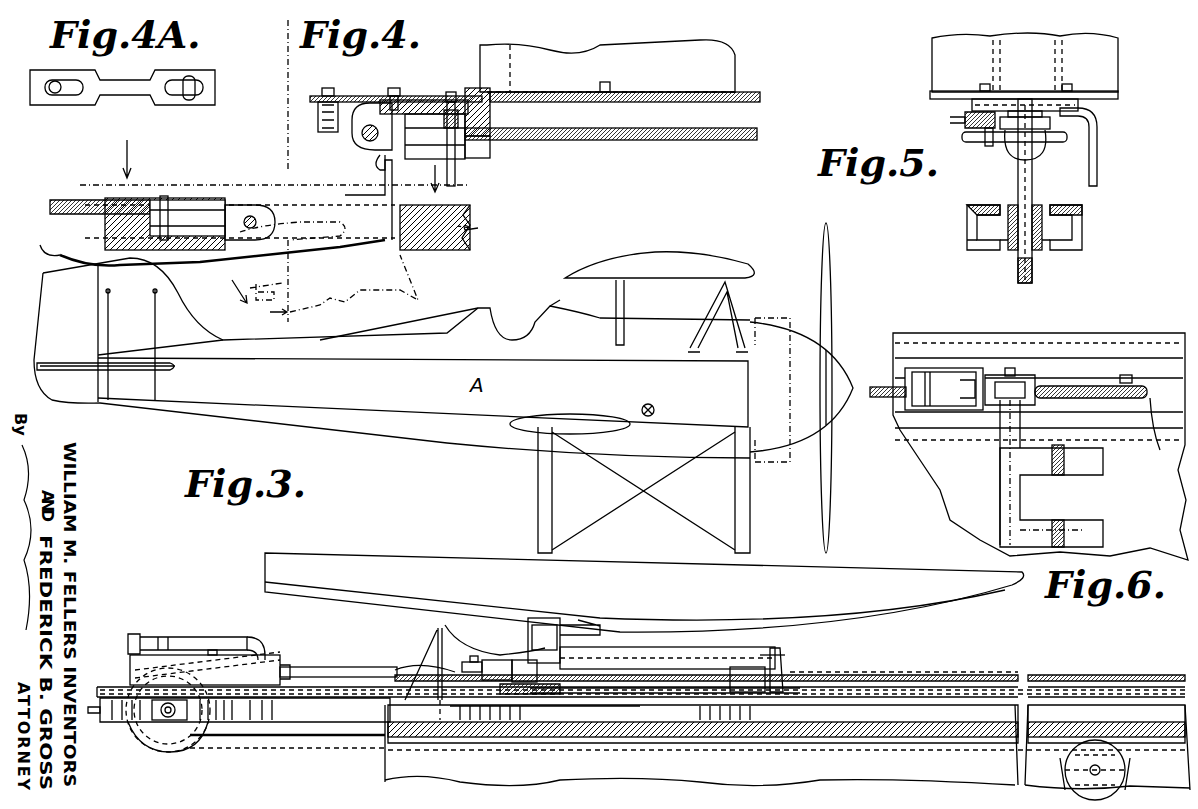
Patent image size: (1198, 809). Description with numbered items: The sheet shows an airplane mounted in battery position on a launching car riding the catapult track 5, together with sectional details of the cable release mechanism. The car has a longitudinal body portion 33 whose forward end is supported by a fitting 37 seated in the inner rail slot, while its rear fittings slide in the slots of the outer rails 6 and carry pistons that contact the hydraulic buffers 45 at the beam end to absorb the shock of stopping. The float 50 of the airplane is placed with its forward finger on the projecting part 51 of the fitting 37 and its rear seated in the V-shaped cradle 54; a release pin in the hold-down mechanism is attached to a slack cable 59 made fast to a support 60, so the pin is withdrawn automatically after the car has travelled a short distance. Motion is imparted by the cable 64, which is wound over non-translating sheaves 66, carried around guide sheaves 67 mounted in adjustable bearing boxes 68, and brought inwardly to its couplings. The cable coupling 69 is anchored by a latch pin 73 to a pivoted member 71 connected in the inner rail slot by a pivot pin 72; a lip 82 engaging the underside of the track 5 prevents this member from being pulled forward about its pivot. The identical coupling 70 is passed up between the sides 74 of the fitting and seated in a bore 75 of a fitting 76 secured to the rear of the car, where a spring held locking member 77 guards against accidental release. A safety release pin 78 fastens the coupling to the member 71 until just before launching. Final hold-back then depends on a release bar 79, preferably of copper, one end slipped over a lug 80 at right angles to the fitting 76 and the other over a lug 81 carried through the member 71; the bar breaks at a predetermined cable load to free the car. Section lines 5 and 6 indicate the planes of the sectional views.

In FIG. 4, the track 5 is at (279, 65).
In FIG. 5, the track 5 is at (1048, 250).
In FIG. 4, the outer rails 6 is at (284, 165).
In FIG. 3, the body portion 33 is at (682, 646).
In FIG. 3, the fitting 37 is at (848, 676).
In FIG. 3, the hydraulic buffers 45 is at (340, 658).
In FIG. 3, the float 50 is at (644, 592).
In FIG. 3, the projecting part 51 is at (790, 662).
In FIG. 3, the V-shaped cradle 54 is at (550, 630).
In FIG. 3, the slack cable 59 is at (470, 640).
In FIG. 3, the support 60 is at (435, 665).
In FIG. 4, the cable 64 is at (704, 141).
In FIG. 6, the cable 64 is at (878, 387).
In FIG. 3, the cable 64 is at (982, 675).
In FIG. 3, the non-translating sheaves 66 is at (1128, 772).
In FIG. 3, the guide sheaves 67 is at (165, 752).
In FIG. 3, the adjustable bearing boxes 68 is at (160, 716).
In FIG. 4, the cable coupling 69 is at (185, 205).
In FIG. 6, the cable coupling 69 is at (948, 378).
In FIG. 4, the cable coupling 70 is at (418, 112).
In FIG. 4, the pivoted member 71 is at (222, 200).
In FIG. 5, the pivoted member 71 is at (1034, 184).
In FIG. 6, the pivoted member 71 is at (1160, 450).
In FIG. 3, the pivoted member 71 is at (398, 660).
In FIG. 4, the pivot pin 72 is at (365, 217).
In FIG. 6, the pivot pin 72 is at (1130, 375).
In FIG. 4, the latch pin 73 is at (250, 215).
In FIG. 6, the latch pin 73 is at (1015, 370).
In FIG. 4, the sides 74 is at (480, 150).
In FIG. 4, the bore 75 is at (454, 92).
In FIG. 4, the fitting 76 is at (458, 110).
In FIG. 3, the fitting 76 is at (520, 658).
In FIG. 4, the spring held locking member 77 is at (492, 92).
In FIG. 5, the spring held locking member 77 is at (1100, 134).
In FIG. 4, the safety release pin 78 is at (374, 125).
In FIG. 5, the safety release pin 78 is at (962, 137).
In FIG. 4A, the release bar 79 is at (128, 88).
In FIG. 4, the release bar 79 is at (352, 96).
In FIG. 4A, the lug 80 is at (190, 78).
In FIG. 4, the lug 80 is at (397, 88).
In FIG. 4A, the lug 81 is at (56, 95).
In FIG. 4, the lug 81 is at (330, 88).
In FIG. 4, the lip 82 is at (210, 258).
In FIG. 5, the lip 82 is at (1016, 258).